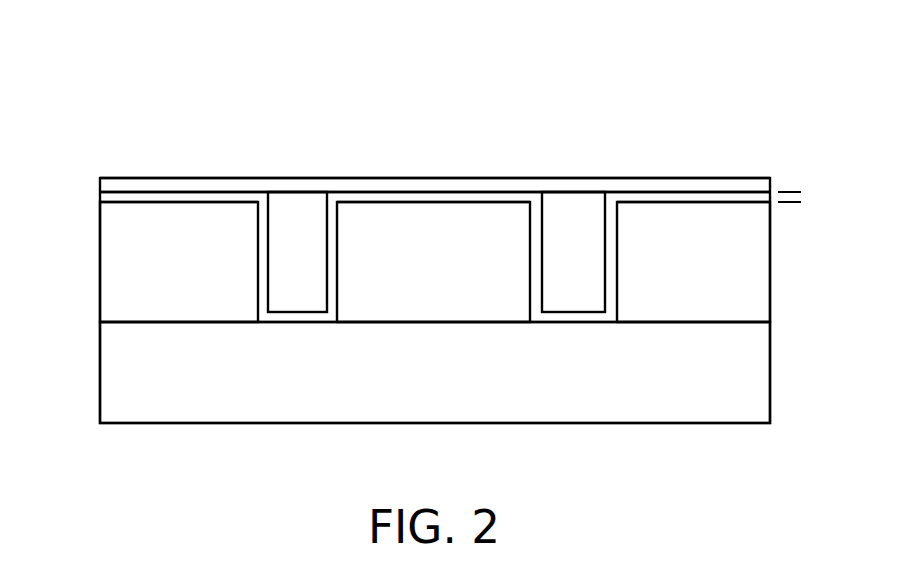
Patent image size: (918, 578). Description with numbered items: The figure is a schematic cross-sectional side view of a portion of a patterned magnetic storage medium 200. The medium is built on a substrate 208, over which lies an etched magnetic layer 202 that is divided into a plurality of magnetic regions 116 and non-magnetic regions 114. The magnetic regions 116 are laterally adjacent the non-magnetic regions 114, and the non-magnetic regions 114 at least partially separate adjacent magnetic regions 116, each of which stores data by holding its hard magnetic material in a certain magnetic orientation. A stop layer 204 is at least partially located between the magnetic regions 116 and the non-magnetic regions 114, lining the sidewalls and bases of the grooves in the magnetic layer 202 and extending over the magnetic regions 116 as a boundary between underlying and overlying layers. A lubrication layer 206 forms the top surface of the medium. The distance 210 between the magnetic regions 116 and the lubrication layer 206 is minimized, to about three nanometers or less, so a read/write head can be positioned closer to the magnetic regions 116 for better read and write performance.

The magnetic storage medium 200 is at (102, 80).
The etched magnetic layer 202 is at (78, 202).
The stop layer 204 is at (100, 195).
The lubrication layer 206 is at (100, 186).
The substrate 208 is at (455, 383).
The distance 210 is at (789, 158).
The non-magnetic regions 114 is at (318, 274).
The magnetic regions 116 is at (198, 274).